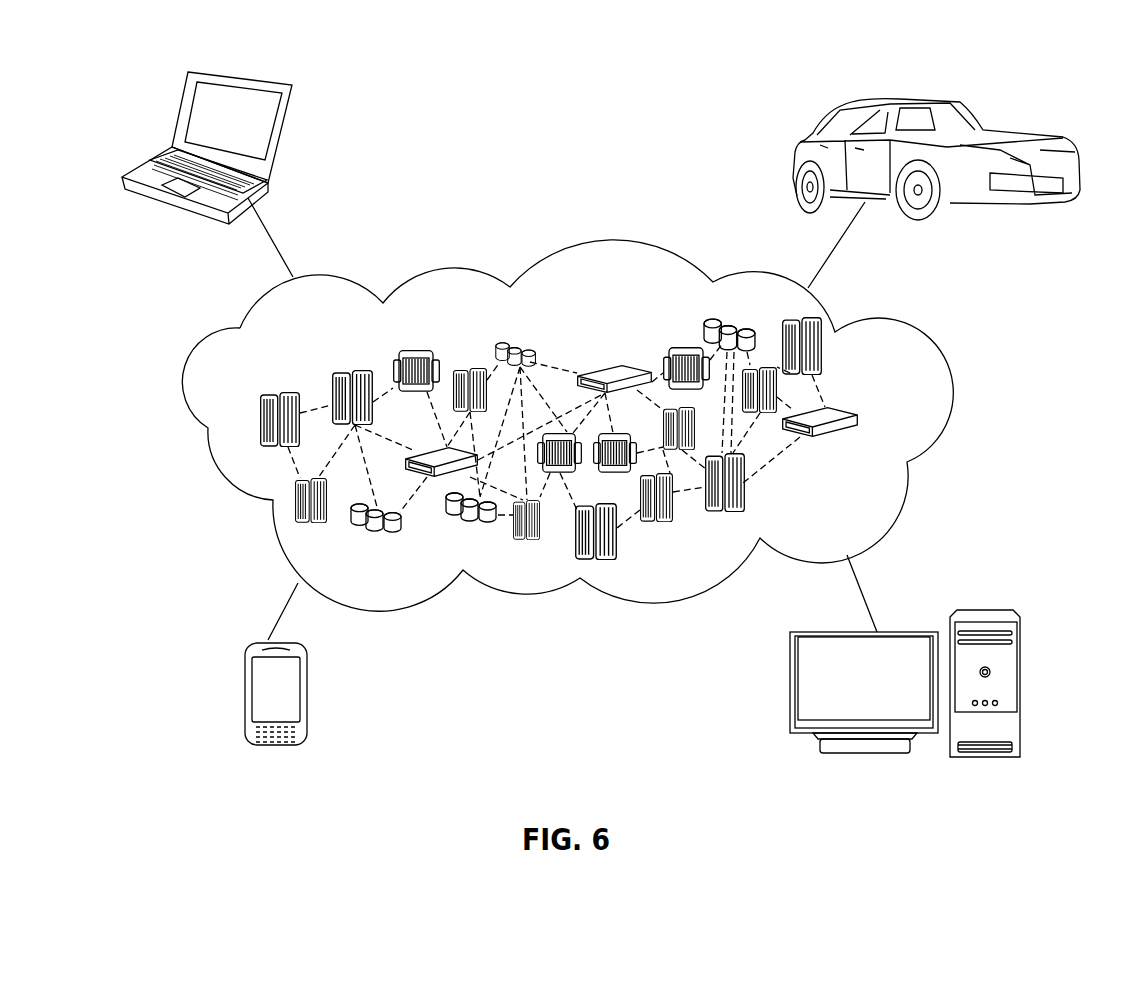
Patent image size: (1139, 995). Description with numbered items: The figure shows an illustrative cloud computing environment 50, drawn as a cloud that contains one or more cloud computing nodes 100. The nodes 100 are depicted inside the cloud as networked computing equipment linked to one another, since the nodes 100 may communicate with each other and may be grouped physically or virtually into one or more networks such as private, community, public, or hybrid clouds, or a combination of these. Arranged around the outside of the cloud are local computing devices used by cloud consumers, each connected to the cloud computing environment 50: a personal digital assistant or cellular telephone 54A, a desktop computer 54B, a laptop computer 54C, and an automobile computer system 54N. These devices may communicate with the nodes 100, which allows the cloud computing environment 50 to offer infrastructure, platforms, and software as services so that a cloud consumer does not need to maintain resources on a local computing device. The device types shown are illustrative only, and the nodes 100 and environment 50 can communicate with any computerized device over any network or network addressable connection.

The cloud computing environment 50 is at (597, 425).
The cloud computing node 100 is at (902, 424).
The personal digital assistant or cellular telephone 54A is at (245, 697).
The desktop computer 54B is at (992, 608).
The laptop computer 54C is at (280, 135).
The automobile computer system 54N is at (800, 142).